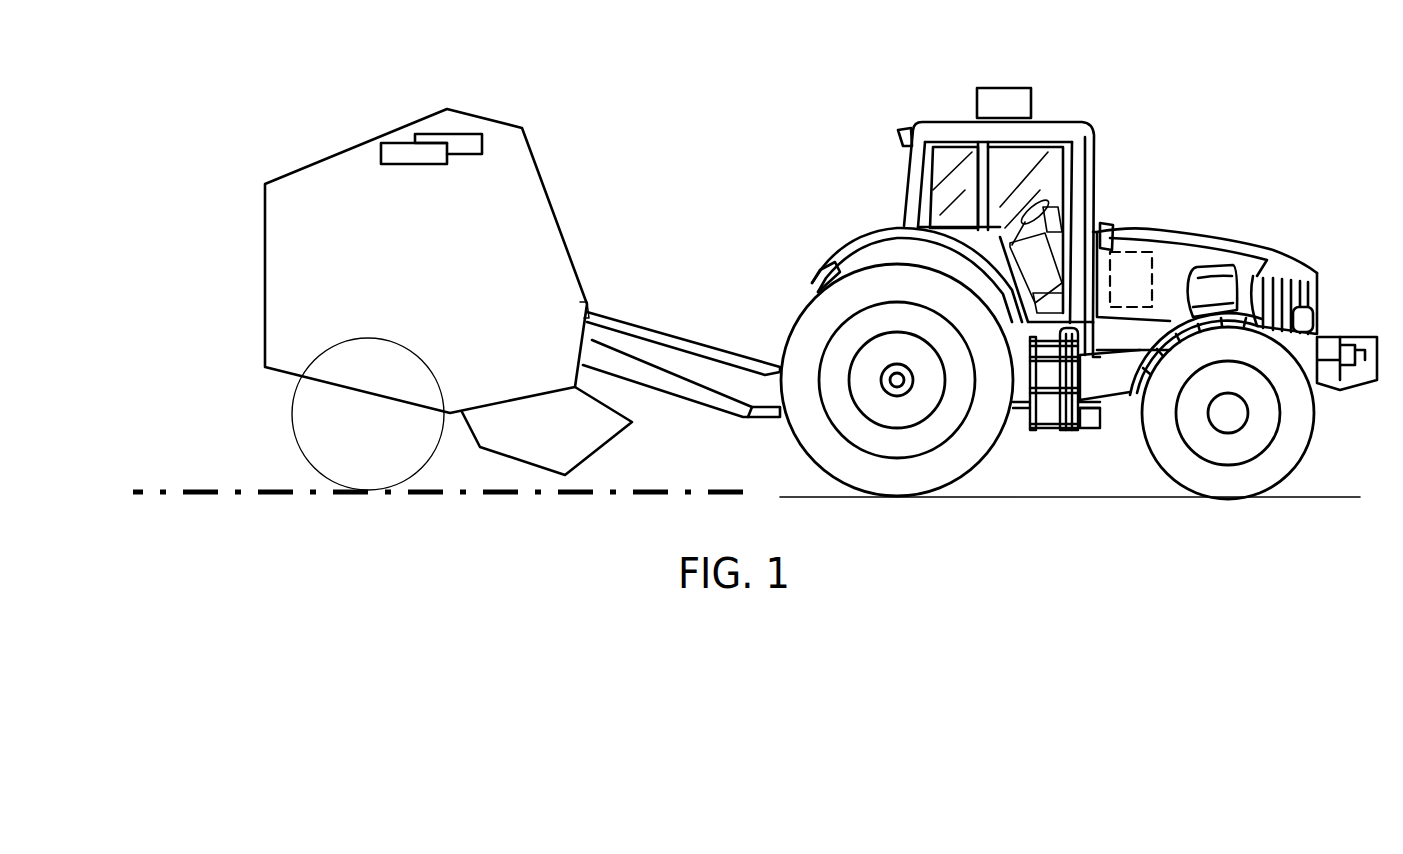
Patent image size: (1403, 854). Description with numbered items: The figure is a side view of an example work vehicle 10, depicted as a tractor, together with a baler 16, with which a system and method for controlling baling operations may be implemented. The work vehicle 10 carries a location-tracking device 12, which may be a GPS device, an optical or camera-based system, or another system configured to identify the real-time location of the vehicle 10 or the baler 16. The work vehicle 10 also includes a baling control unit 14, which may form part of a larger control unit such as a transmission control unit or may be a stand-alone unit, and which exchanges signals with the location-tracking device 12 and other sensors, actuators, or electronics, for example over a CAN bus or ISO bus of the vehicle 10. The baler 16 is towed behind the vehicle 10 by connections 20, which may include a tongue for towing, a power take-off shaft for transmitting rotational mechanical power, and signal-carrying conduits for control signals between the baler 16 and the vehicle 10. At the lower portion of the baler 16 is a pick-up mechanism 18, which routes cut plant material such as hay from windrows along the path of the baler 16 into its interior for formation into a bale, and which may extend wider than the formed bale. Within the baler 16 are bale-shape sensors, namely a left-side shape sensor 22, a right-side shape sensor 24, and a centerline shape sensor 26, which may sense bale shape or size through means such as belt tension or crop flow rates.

The work vehicle 10 is at (1260, 243).
The location-tracking device 12 is at (1012, 88).
The baling control unit 14 is at (1127, 250).
The baler 16 is at (400, 127).
The pick-up mechanism 18 is at (535, 468).
The connections 20 is at (612, 300).
The left-side shape sensor 22 is at (465, 192).
The right-side shape sensor 24 is at (415, 164).
The centerline shape sensor 26 is at (459, 133).